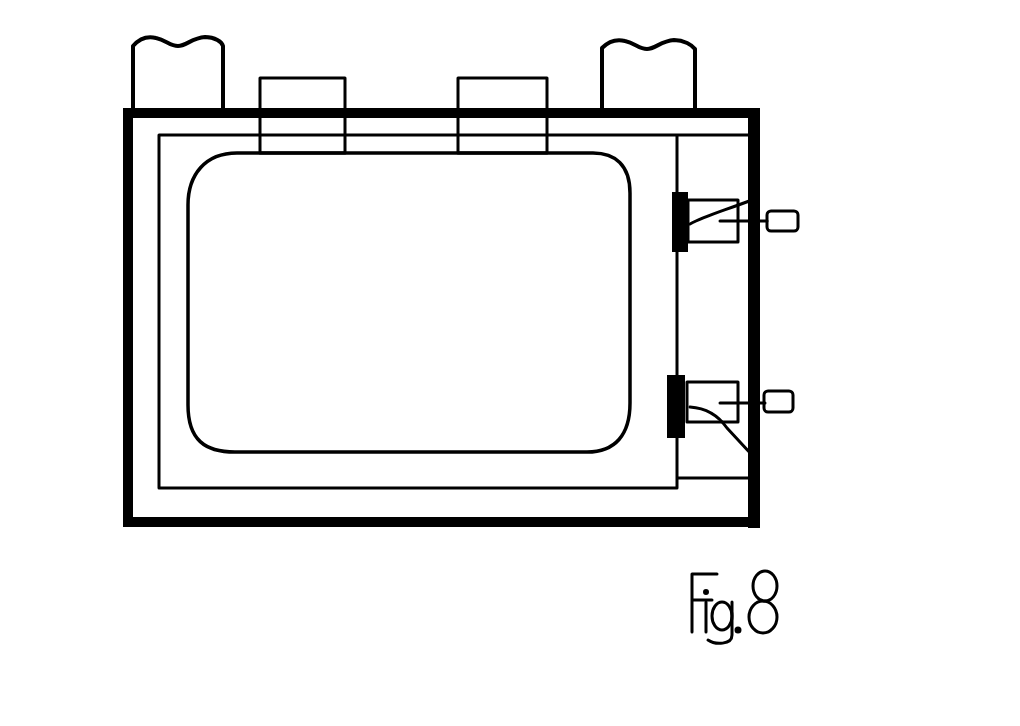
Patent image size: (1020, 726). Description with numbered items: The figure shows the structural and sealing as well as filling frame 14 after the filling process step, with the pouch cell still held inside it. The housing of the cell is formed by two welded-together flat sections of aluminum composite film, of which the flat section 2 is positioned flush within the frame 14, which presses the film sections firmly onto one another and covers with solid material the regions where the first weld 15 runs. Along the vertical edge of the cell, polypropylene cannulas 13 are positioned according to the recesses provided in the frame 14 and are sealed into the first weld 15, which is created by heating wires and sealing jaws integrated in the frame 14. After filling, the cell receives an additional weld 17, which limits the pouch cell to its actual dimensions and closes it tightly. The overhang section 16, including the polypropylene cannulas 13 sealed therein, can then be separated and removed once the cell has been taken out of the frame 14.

The flat section 2 is at (195, 455).
The polypropylene cannula 13 is at (792, 206).
The structural and sealing as well as filling frame 14 is at (237, 524).
The first weld 15 is at (680, 178).
The overhang section 16 is at (740, 302).
The additional weld 17 is at (760, 209).